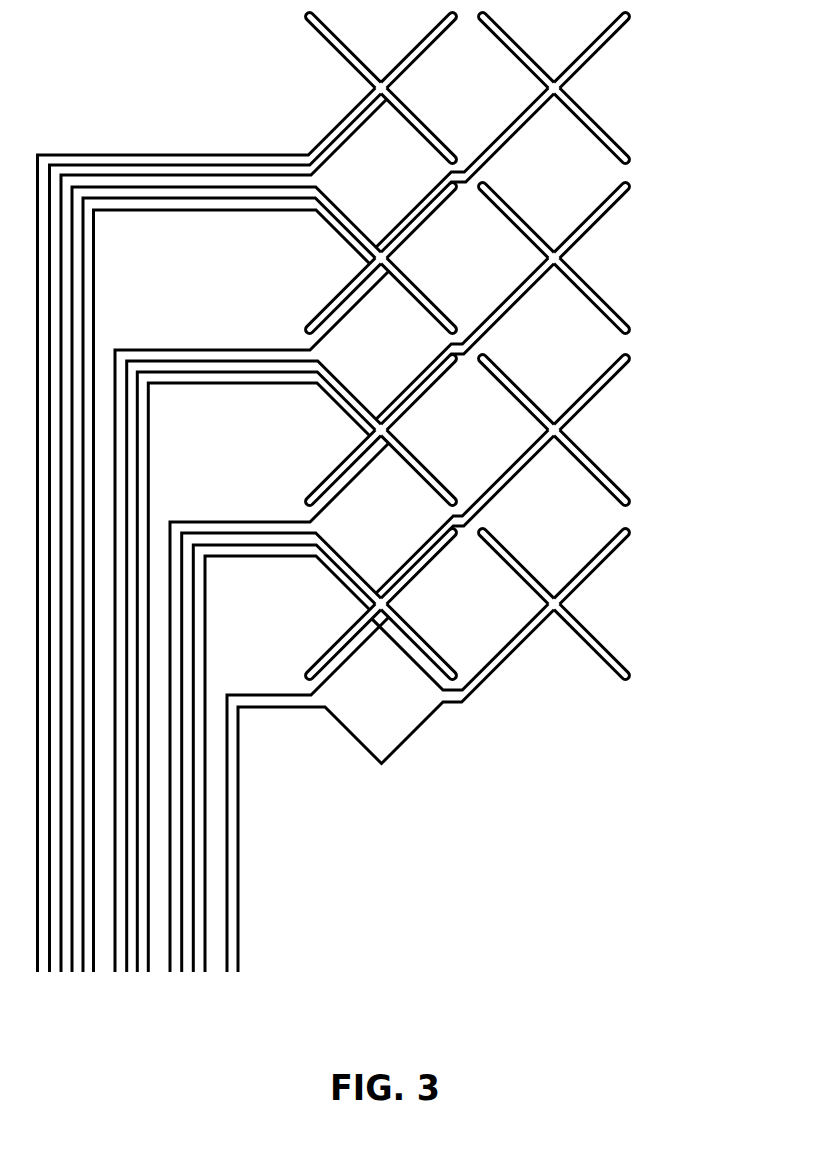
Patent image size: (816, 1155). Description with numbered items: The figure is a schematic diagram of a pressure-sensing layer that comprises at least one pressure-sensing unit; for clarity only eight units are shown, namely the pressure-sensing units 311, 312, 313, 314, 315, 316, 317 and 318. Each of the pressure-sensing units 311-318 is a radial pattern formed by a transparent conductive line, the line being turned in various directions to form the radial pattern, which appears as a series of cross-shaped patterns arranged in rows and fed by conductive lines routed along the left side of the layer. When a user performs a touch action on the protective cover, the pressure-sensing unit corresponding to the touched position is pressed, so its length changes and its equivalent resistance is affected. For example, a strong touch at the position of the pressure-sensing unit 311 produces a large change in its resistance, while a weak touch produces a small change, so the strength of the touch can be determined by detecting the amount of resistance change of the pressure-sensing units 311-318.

The pressure-sensing unit 311 is at (320, 127).
The pressure-sensing unit 312 is at (612, 132).
The pressure-sensing unit 313 is at (320, 299).
The pressure-sensing unit 314 is at (612, 304).
The pressure-sensing unit 315 is at (320, 471).
The pressure-sensing unit 316 is at (612, 476).
The pressure-sensing unit 317 is at (320, 643).
The pressure-sensing unit 318 is at (612, 648).